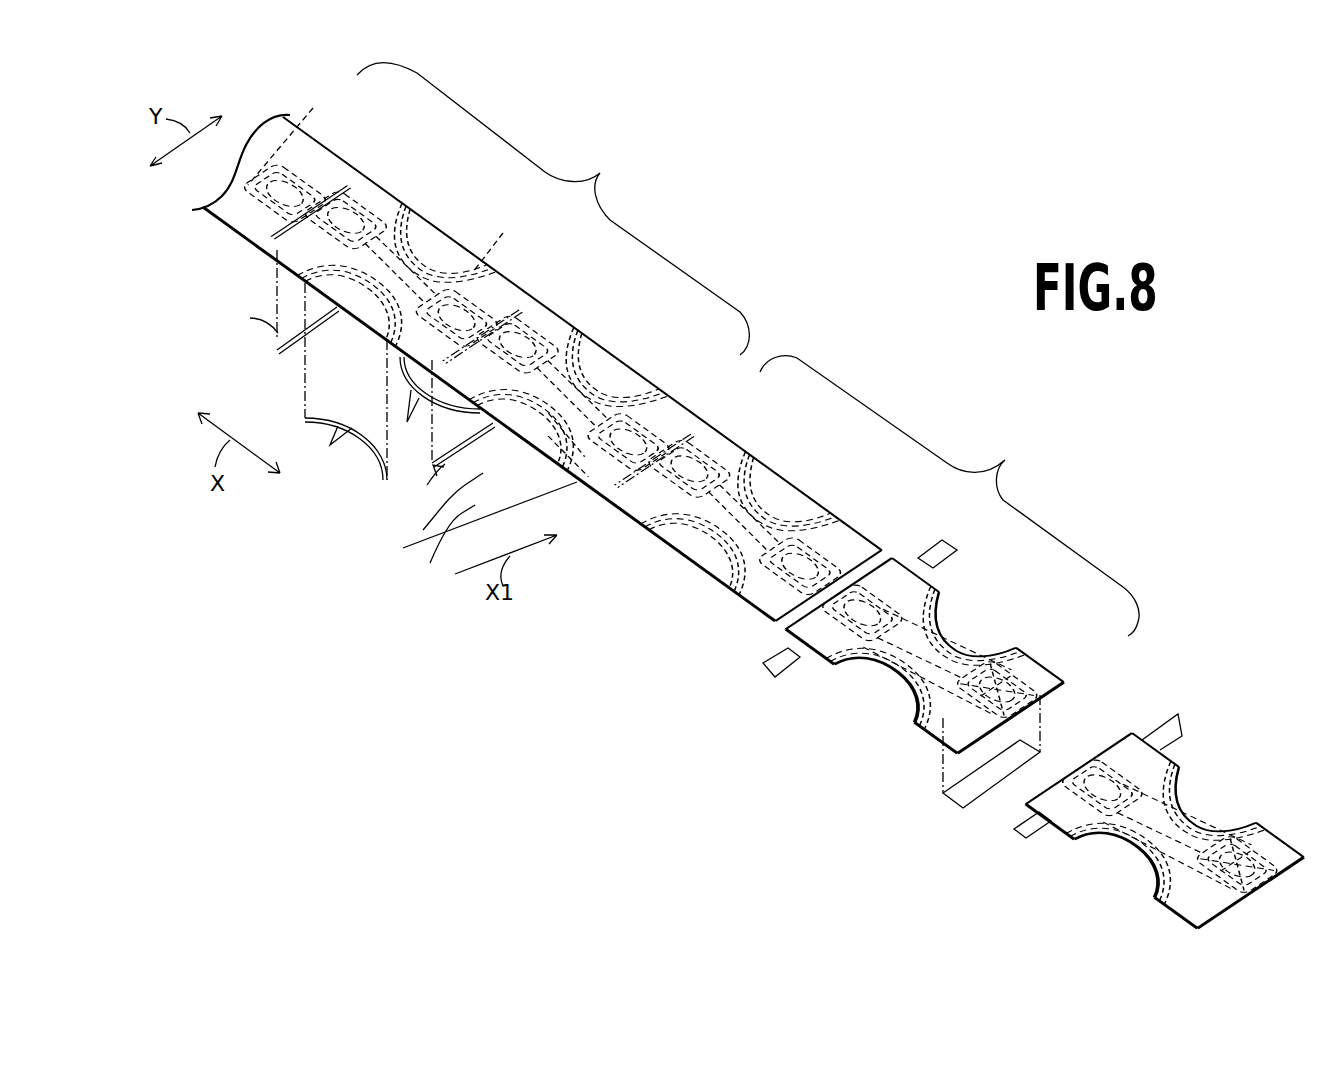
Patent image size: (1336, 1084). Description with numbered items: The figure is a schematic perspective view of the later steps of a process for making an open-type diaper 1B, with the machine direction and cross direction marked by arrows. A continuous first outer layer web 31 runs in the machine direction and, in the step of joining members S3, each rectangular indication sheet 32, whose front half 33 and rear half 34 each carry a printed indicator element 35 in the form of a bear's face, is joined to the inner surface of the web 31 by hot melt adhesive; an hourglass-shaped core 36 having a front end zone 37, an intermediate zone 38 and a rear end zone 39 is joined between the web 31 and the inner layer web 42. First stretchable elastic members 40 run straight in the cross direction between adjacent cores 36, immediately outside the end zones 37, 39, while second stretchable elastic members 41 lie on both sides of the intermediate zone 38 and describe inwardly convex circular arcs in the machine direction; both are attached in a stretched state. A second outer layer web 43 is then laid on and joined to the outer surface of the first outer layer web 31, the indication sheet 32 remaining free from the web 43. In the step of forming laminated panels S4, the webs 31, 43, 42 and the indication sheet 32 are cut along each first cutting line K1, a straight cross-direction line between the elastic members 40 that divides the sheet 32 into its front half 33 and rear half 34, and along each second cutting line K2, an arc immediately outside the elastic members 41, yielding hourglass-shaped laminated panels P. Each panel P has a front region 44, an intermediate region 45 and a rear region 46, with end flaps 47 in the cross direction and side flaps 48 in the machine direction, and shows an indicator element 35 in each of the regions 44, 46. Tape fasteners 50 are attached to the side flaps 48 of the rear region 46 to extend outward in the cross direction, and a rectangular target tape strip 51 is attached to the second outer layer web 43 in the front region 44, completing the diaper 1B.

The first outer layer web 31 is at (240, 226).
The indication sheet 32 is at (300, 190).
The front half 33 is at (823, 523).
The rear half 34 is at (605, 435).
The indicator element 35 is at (623, 398).
The core 36 is at (425, 267).
The front end zone 37 is at (390, 181).
The intermediate zone 38 is at (572, 343).
The rear end zone 39 is at (375, 238).
The first stretchable elastic member 40 is at (1283, 850).
The second stretchable elastic member 41 is at (1228, 795).
The inner layer web 42 is at (373, 195).
The second outer layer web 43 is at (490, 529).
The front region 44 is at (902, 738).
The intermediate region 45 is at (942, 655).
The rear region 46 is at (903, 580).
The end flap 47 is at (1050, 702).
The side flap 48 is at (1017, 647).
The tape fastener 50 is at (948, 540).
The target tape strip 51 is at (948, 800).
The diaper 1B is at (1267, 757).
The laminated panel P is at (1063, 687).
The first cutting line K1 is at (714, 412).
The second cutting line K2 is at (790, 503).
The step of joining members S3 is at (553, 209).
The step of forming laminated panels S4 is at (949, 496).